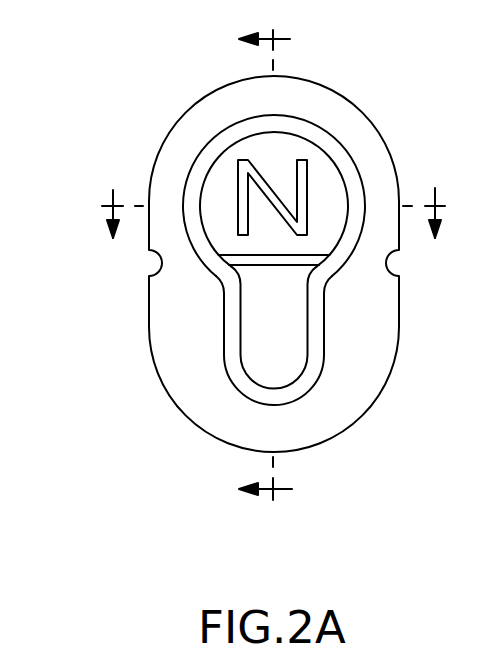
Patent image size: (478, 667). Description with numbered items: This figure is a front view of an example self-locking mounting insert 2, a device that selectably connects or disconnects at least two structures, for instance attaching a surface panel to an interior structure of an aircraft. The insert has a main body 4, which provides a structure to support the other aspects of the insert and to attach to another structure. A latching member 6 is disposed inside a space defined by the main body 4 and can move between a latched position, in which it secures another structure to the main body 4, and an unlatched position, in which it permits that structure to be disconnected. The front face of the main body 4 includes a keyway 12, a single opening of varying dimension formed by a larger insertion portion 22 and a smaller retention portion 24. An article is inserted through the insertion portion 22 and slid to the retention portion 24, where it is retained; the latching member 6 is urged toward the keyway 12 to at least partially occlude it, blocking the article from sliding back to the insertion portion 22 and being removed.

The self-locking mounting insert 2 is at (250, 260).
The main body 4 is at (172, 372).
The latching member 6 is at (237, 167).
The keyway 12 is at (194, 260).
The insertion portion 22 is at (207, 232).
The retention portion 24 is at (248, 297).